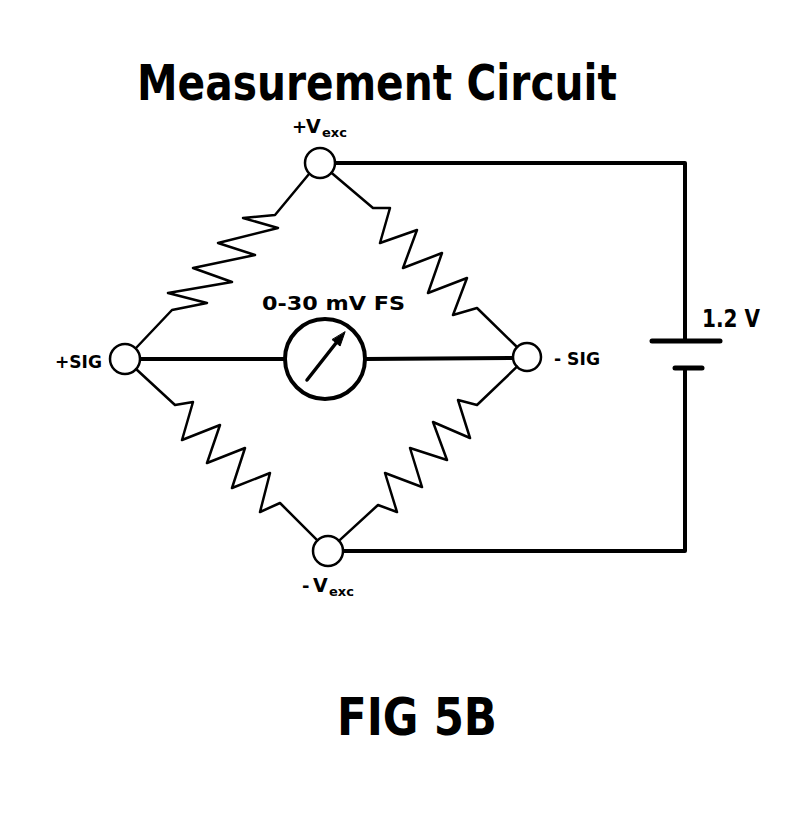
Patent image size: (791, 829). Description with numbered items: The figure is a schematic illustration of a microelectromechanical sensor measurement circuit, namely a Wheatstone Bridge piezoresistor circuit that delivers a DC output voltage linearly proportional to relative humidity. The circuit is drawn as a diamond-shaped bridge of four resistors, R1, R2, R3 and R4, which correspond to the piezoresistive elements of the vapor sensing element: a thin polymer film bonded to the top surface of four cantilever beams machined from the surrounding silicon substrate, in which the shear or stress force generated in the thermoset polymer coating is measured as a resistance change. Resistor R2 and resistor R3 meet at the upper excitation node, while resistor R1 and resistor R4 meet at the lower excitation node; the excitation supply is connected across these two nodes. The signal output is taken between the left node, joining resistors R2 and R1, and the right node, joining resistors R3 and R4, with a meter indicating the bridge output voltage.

The bridge resistor R1 is at (226, 454).
The bridge resistor R2 is at (222, 261).
The bridge resistor R3 is at (424, 260).
The bridge resistor R4 is at (428, 454).